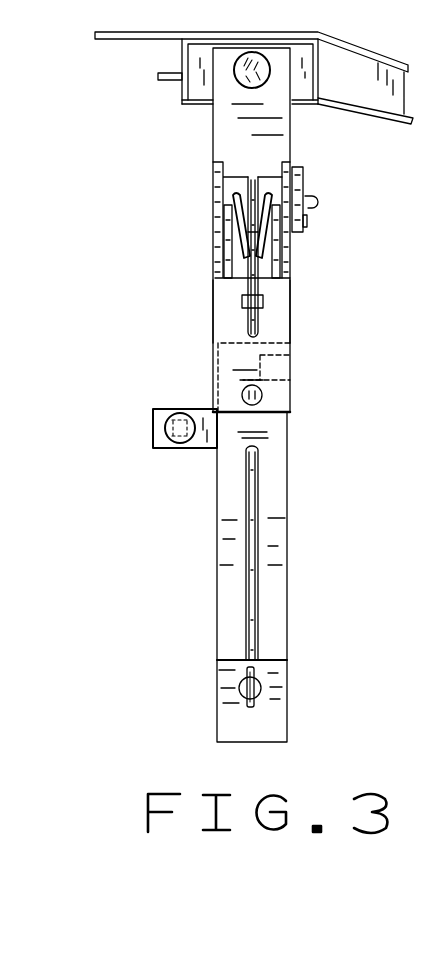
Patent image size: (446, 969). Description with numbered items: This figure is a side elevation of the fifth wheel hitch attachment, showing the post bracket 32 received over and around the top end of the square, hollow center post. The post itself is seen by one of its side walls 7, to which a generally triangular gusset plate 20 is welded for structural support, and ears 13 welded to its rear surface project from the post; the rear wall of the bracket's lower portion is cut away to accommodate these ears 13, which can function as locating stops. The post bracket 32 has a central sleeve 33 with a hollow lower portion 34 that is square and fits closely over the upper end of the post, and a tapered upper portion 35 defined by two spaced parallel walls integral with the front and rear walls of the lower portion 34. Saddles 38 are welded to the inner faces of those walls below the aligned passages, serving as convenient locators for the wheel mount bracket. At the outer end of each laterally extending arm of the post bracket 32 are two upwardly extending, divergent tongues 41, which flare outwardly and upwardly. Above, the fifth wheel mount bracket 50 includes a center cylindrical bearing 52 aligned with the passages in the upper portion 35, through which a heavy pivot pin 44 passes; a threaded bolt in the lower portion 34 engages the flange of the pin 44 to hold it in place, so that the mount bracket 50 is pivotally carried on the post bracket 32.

The side walls 7 is at (272, 493).
The ears 13 is at (205, 443).
The gusset plates 20 is at (253, 577).
The post bracket 32 is at (300, 324).
The central sleeve 33 is at (292, 288).
The lower portion 34 is at (245, 298).
The upper portion 35 is at (290, 243).
The saddles 38 is at (230, 243).
The tongues 41 is at (235, 210).
The pivot pin 44 is at (305, 170).
The fifth wheel mount bracket 50 is at (183, 139).
The center cylindrical bearing 52 is at (250, 185).